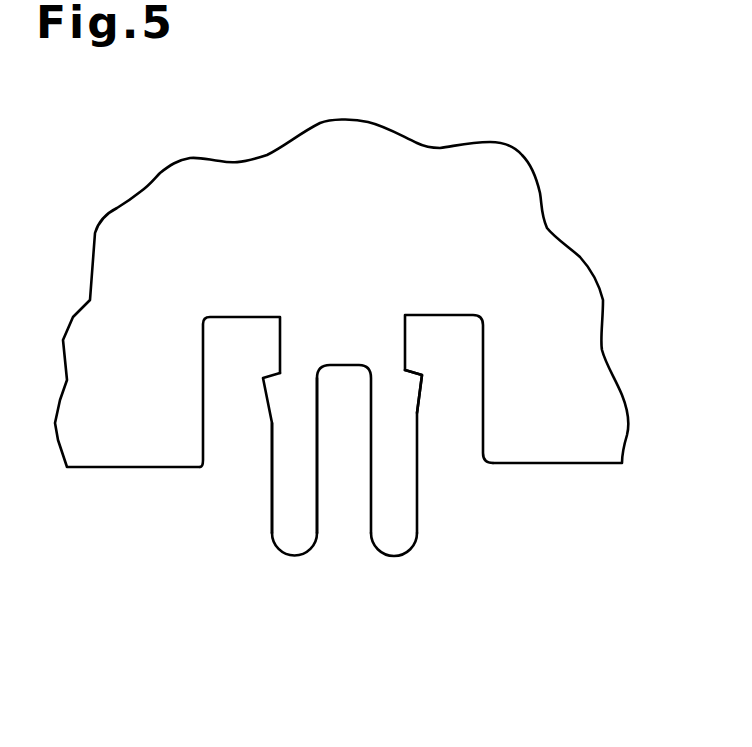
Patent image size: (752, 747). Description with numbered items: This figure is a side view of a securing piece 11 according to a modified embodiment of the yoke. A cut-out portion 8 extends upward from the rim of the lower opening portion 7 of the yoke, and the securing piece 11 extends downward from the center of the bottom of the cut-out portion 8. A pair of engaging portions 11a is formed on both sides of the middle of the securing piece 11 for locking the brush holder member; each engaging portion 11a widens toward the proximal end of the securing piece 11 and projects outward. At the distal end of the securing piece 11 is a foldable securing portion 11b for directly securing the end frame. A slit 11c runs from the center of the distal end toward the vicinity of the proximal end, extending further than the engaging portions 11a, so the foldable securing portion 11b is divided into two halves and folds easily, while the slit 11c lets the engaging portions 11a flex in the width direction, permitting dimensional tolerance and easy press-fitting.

The lower opening portion 7 is at (95, 468).
The cut-out portion 8 is at (255, 316).
The securing piece 11 is at (447, 514).
The engaging portion 11a is at (423, 396).
The foldable securing portion 11b is at (387, 556).
The slit 11c is at (300, 513).